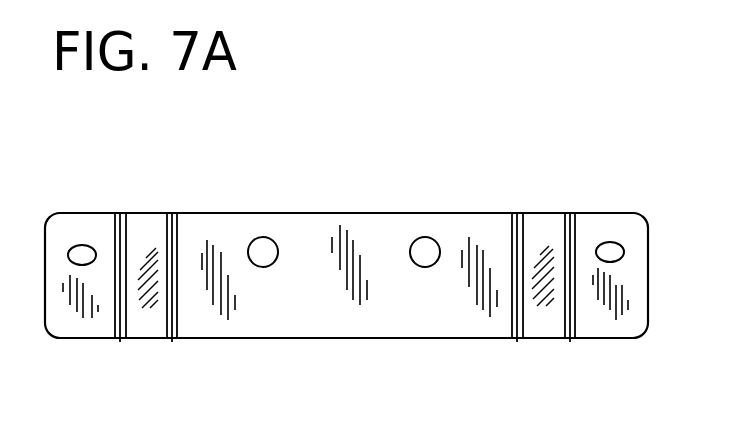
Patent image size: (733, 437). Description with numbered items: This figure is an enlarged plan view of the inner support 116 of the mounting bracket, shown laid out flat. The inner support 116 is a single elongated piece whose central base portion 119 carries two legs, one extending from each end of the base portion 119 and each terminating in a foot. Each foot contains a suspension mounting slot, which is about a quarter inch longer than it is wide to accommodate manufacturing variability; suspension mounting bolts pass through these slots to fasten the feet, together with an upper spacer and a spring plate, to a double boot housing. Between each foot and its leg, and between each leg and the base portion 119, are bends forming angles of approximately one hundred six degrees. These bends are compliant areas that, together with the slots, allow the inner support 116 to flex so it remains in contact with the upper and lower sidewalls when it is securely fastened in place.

The inner support 116 is at (412, 100).
The base portion 119 is at (353, 317).